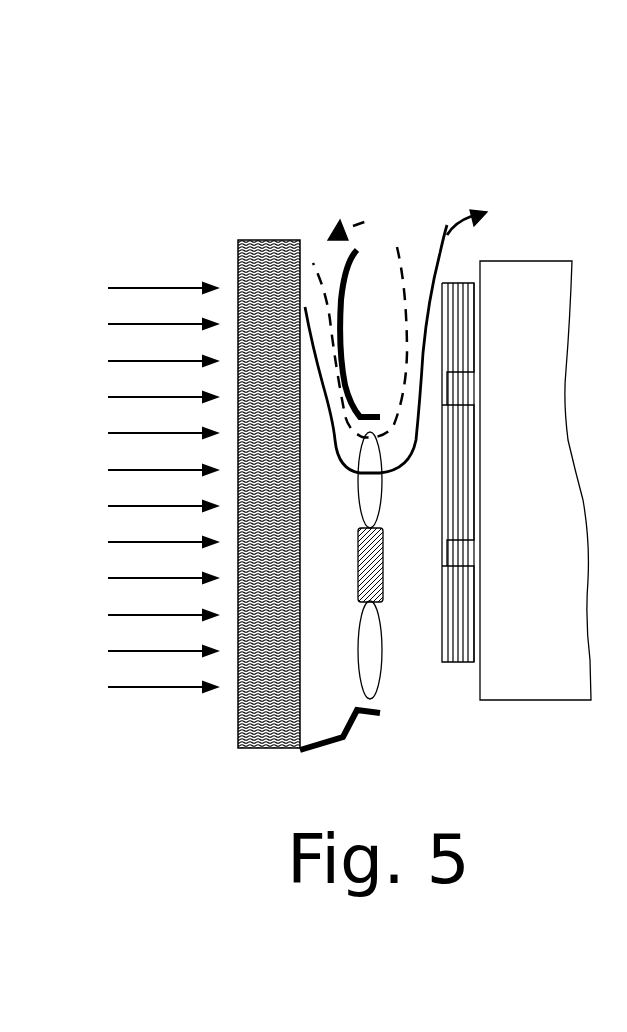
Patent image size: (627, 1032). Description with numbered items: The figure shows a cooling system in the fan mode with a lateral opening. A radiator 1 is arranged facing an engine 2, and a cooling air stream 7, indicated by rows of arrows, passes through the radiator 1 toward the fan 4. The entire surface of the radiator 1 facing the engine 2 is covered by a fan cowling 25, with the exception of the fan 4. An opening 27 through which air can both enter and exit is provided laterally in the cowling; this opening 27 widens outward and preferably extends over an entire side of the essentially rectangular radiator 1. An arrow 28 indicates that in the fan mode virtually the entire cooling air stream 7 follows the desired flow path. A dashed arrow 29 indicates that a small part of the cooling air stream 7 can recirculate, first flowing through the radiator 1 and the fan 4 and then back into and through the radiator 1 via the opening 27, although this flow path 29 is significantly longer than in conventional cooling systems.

The radiator 1 is at (275, 267).
The engine 2 is at (535, 347).
The fan 4 is at (368, 650).
The cooling air stream 7 is at (156, 735).
The fan cowling 25 is at (391, 257).
The opening 27 is at (318, 232).
The arrow 28 is at (447, 225).
The dashed arrow (recirculation flow path) 29 is at (392, 230).